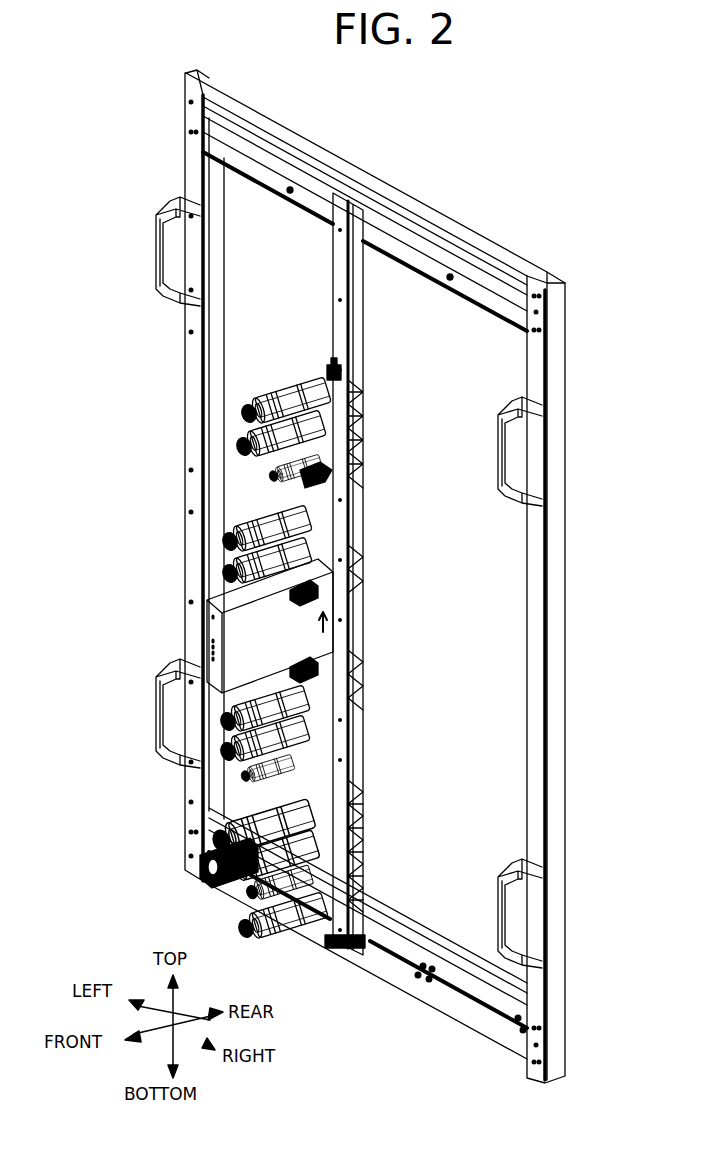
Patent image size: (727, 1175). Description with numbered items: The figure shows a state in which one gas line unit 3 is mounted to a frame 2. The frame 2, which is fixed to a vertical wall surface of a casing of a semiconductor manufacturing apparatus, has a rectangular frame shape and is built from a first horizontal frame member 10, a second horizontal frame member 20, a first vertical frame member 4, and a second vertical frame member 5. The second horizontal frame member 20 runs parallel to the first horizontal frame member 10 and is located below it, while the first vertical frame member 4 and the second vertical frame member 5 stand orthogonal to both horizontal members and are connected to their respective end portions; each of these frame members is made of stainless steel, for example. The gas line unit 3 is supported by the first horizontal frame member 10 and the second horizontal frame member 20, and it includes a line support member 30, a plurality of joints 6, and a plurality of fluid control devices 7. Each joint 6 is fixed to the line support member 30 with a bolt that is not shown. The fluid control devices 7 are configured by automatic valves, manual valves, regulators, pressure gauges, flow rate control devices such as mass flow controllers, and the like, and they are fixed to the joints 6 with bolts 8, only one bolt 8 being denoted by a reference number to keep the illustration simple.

The frame 2 is at (562, 268).
The gas line unit 3 is at (318, 966).
The first vertical frame member 4 is at (188, 432).
The second vertical frame member 5 is at (556, 583).
The joint 6 is at (355, 430).
The fluid control device 7 is at (272, 412).
The bolt 8 is at (312, 476).
The first horizontal frame member 10 is at (386, 185).
The second horizontal frame member 20 is at (395, 982).
The line support member 30 is at (357, 632).